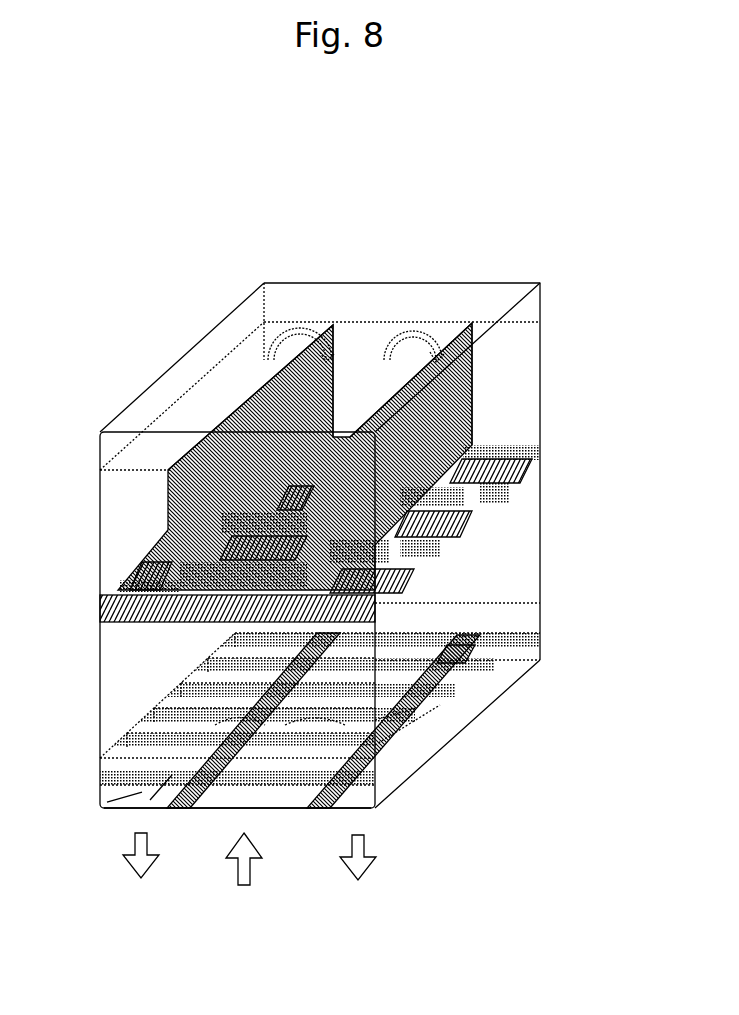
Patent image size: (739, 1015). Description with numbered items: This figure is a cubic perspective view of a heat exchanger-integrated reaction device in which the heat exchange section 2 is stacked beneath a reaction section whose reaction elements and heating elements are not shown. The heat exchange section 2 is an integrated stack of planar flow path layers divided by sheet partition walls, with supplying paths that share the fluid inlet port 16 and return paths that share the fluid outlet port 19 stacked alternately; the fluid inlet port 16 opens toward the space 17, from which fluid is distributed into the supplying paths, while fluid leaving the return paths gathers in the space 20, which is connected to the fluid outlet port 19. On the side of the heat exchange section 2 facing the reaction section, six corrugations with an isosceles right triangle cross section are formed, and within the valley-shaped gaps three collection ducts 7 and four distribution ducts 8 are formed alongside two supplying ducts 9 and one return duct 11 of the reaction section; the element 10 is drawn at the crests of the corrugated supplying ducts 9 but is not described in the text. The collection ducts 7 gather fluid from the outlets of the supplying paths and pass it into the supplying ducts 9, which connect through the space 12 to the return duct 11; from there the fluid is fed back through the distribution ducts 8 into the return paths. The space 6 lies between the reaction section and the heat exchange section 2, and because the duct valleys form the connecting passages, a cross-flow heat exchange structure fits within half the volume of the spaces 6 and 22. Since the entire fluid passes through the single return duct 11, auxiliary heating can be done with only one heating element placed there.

The heat exchange section 2 is at (94, 627).
The space 6 is at (96, 595).
The collection ducts 7 is at (388, 550).
The distribution ducts 8 is at (400, 587).
The supply duct 9 is at (495, 340).
The fin crest 10 is at (445, 363).
The return duct 11 is at (356, 358).
The space 12 is at (96, 432).
The fluid inlet port 16 is at (420, 708).
The space 17 is at (237, 797).
The fluid outlet port 19 is at (375, 808).
The space 20 is at (345, 797).
The space 22 is at (96, 762).